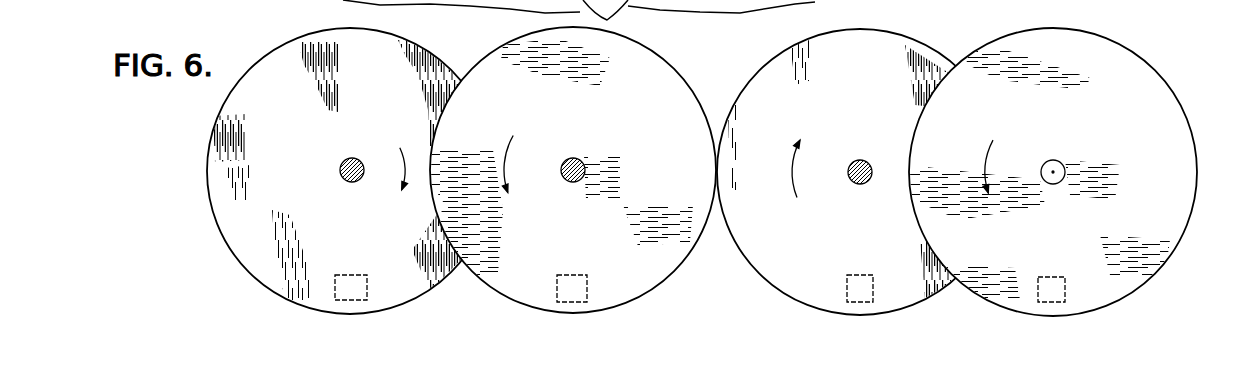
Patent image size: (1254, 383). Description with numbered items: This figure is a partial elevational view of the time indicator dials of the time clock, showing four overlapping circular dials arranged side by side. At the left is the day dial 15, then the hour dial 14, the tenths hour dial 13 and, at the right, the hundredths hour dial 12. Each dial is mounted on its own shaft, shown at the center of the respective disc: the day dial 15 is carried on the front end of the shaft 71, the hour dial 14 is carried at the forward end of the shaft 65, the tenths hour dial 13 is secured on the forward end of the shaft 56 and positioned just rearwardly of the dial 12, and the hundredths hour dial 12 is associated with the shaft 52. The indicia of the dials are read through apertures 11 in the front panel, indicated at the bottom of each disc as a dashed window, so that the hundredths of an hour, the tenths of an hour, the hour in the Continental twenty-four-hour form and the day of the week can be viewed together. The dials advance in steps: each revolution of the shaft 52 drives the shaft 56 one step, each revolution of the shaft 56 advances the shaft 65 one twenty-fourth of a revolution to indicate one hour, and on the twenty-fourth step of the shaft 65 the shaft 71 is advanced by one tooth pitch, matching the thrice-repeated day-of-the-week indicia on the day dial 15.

The apertures 11 is at (367, 300).
The hundredths hour dial 12 is at (1127, 50).
The tenths hour dial 13 is at (904, 40).
The hour dial 14 is at (651, 50).
The day dial 15 is at (402, 38).
The shaft 52 is at (1056, 184).
The shaft 56 is at (855, 183).
The shaft 65 is at (571, 182).
The shaft 71 is at (343, 178).